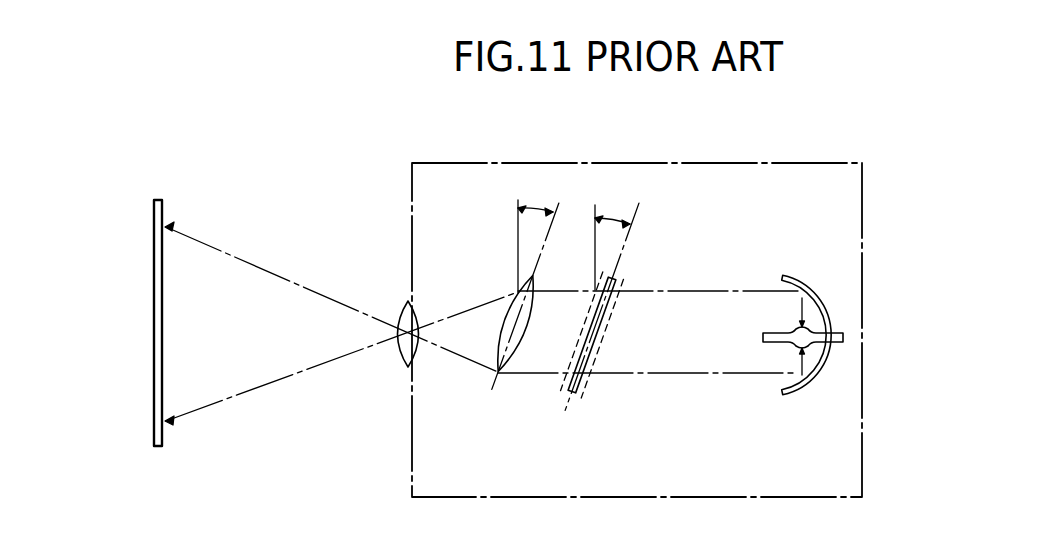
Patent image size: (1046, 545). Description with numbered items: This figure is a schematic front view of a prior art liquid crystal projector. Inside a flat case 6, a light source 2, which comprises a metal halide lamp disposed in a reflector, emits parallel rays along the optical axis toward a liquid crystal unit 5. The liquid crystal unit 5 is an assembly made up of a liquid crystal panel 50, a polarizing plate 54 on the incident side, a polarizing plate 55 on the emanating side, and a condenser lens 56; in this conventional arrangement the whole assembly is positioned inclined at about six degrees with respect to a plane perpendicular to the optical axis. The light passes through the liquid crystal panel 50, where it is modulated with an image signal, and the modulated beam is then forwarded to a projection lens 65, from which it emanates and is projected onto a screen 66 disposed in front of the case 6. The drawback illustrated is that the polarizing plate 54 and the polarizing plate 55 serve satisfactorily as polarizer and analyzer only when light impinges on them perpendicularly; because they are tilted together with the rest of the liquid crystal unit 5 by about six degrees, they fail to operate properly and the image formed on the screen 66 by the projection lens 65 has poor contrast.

The light source 2 is at (780, 327).
The liquid crystal unit 5 is at (577, 331).
The flat case 6 is at (747, 163).
The liquid crystal panel 50 is at (588, 378).
The polarizing plate 54 is at (589, 323).
The polarizing plate 55 is at (614, 314).
The condenser lens 56 is at (517, 358).
The projection lens 65 is at (411, 305).
The screen 66 is at (164, 212).